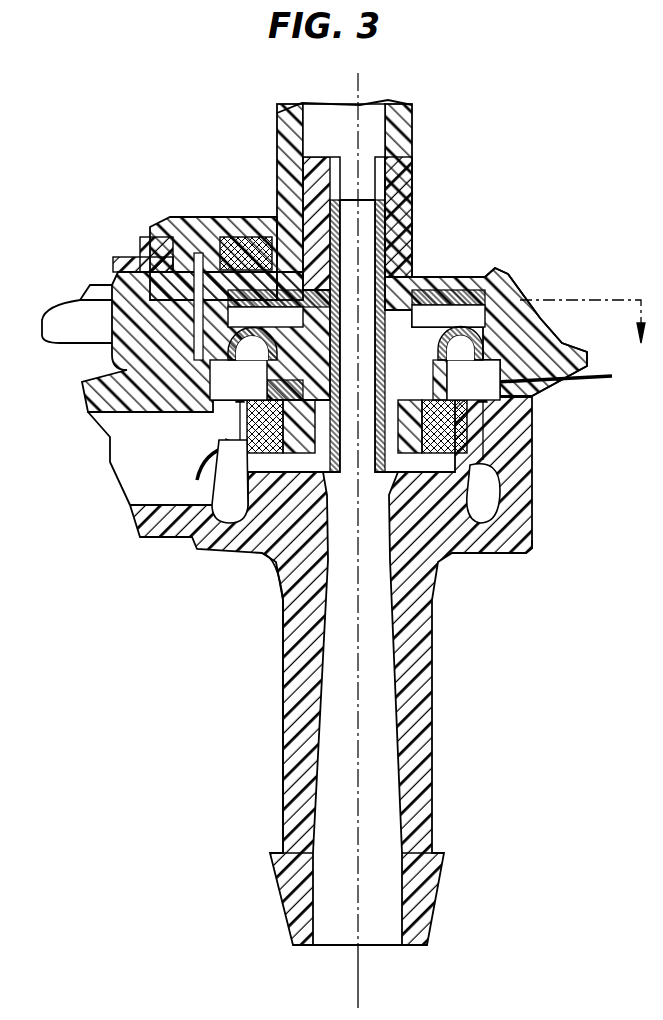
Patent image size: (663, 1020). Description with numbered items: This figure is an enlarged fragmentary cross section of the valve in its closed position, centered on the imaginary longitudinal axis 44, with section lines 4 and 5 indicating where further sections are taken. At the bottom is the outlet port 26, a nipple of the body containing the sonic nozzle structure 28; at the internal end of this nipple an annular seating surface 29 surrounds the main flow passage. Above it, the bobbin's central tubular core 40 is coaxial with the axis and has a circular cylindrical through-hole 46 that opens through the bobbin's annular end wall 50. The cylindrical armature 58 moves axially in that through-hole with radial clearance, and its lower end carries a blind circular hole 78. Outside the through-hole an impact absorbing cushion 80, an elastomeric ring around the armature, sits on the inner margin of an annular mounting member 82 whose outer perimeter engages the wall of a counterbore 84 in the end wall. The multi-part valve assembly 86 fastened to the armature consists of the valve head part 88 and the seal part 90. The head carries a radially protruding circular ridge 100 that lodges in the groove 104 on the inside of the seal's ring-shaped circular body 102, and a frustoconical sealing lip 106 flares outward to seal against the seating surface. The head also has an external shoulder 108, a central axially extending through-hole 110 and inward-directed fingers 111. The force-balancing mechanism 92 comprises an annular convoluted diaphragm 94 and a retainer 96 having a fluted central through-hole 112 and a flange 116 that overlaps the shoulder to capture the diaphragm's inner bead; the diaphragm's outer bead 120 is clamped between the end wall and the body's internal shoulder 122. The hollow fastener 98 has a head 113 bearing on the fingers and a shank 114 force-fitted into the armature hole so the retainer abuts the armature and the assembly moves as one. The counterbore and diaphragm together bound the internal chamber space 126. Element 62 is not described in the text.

The section line 4- 4 is at (199, 255).
The section line 5- 5 is at (243, 442).
The outlet port 26 is at (440, 803).
The sonic nozzle structure 28 is at (300, 597).
The annular seating surface 29 is at (530, 550).
The central tubular core 40 is at (292, 128).
The imaginary longitudinal axis 44 is at (360, 987).
The circular cylindrical through-hole 46 is at (412, 122).
The annular end wall 50 is at (200, 228).
The armature 58 is at (405, 185).
The retaining ring 62 is at (150, 243).
The blind circular hole 78 is at (347, 165).
The impact absorbing cushion 80 is at (445, 280).
The annular mounting member 82 is at (483, 290).
The counterbore 84 is at (500, 300).
The multi-part valve assembly 86 is at (222, 470).
The valve head part 88 is at (393, 305).
The seal part 90 is at (253, 405).
The force-balancing mechanism 92 is at (584, 374).
The annular convoluted diaphragm 94 is at (490, 318).
The retainer 96 is at (410, 277).
The fastener 98 is at (363, 196).
The radially protruding circular ridge 100 is at (500, 447).
The ring-shaped circular body 102 is at (467, 412).
The groove 104 is at (305, 472).
The frustoconical sealing lip 106 is at (443, 480).
The external shoulder 108 is at (100, 390).
The central axially extending through-hole 110 is at (427, 465).
The circumferentially spaced fingers 111 is at (283, 570).
The central through-hole 112 is at (250, 358).
The head 113 is at (340, 440).
The shank 114 is at (322, 217).
The flange 116 is at (140, 262).
The bead 120 is at (517, 330).
The internal shoulder 122 is at (113, 338).
The internal chamber space 126 is at (232, 268).